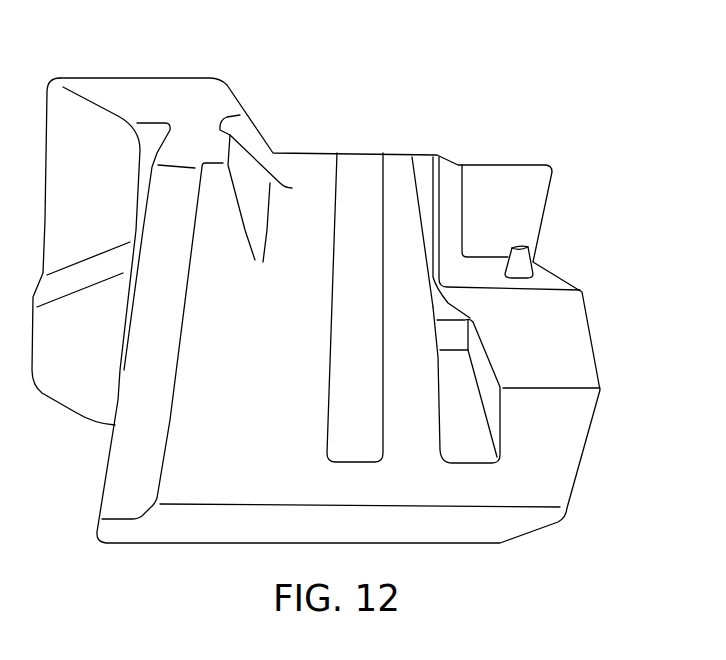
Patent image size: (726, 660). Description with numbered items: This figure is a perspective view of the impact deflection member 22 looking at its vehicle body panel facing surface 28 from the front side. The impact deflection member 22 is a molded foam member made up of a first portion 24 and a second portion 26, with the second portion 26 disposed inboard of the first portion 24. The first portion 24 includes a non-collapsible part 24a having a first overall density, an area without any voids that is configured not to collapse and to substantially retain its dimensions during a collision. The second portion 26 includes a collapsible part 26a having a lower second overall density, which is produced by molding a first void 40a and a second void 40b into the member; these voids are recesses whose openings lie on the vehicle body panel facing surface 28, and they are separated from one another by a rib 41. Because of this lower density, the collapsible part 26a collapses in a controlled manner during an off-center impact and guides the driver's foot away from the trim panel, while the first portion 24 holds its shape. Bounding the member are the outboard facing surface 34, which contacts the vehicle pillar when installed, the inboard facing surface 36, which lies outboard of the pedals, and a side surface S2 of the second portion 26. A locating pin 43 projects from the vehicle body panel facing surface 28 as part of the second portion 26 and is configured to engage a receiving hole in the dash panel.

The impact deflection member 22 is at (462, 87).
The first portion 24 is at (125, 76).
The non-collapsible part 24a is at (193, 106).
The second portion 26 is at (495, 157).
The collapsible part 26a is at (393, 152).
The vehicle body panel facing surface 28 is at (312, 178).
The outboard facing surface 34 is at (120, 372).
The inboard facing surface 36 is at (588, 320).
The first void 40a is at (357, 308).
The second void 40b is at (443, 303).
The rib 41 is at (400, 252).
The locating pin 43 is at (533, 254).
The side surface S2 is at (205, 523).